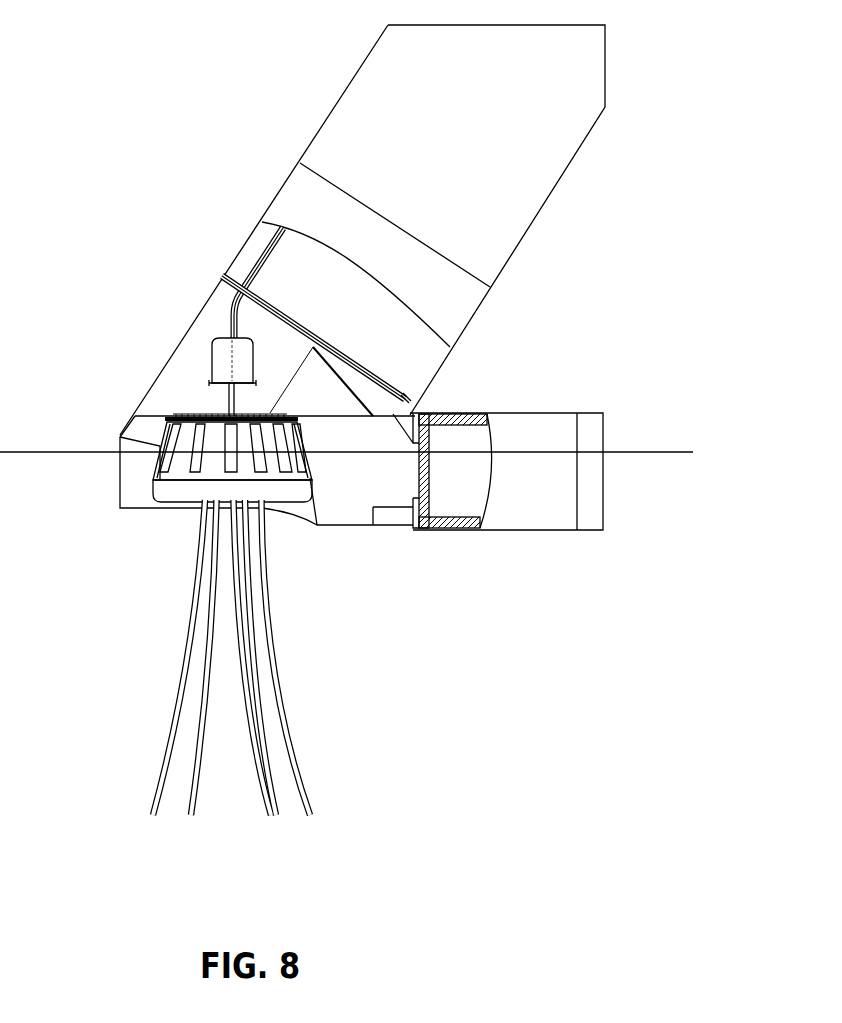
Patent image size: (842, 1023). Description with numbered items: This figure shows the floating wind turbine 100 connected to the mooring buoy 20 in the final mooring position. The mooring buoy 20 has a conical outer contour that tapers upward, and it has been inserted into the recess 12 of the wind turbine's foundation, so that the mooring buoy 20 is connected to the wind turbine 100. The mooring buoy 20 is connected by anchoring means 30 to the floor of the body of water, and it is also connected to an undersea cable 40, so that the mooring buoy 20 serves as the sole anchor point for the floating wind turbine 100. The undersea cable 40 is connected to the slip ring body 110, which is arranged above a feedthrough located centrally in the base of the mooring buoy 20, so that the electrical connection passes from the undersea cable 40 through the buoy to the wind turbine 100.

The recess 12 is at (160, 503).
The mooring buoy 20 is at (177, 461).
The anchoring means 30 is at (183, 682).
The undersea cable 40 is at (235, 550).
The wind turbine 100 is at (556, 509).
The slip ring body 110 is at (222, 350).